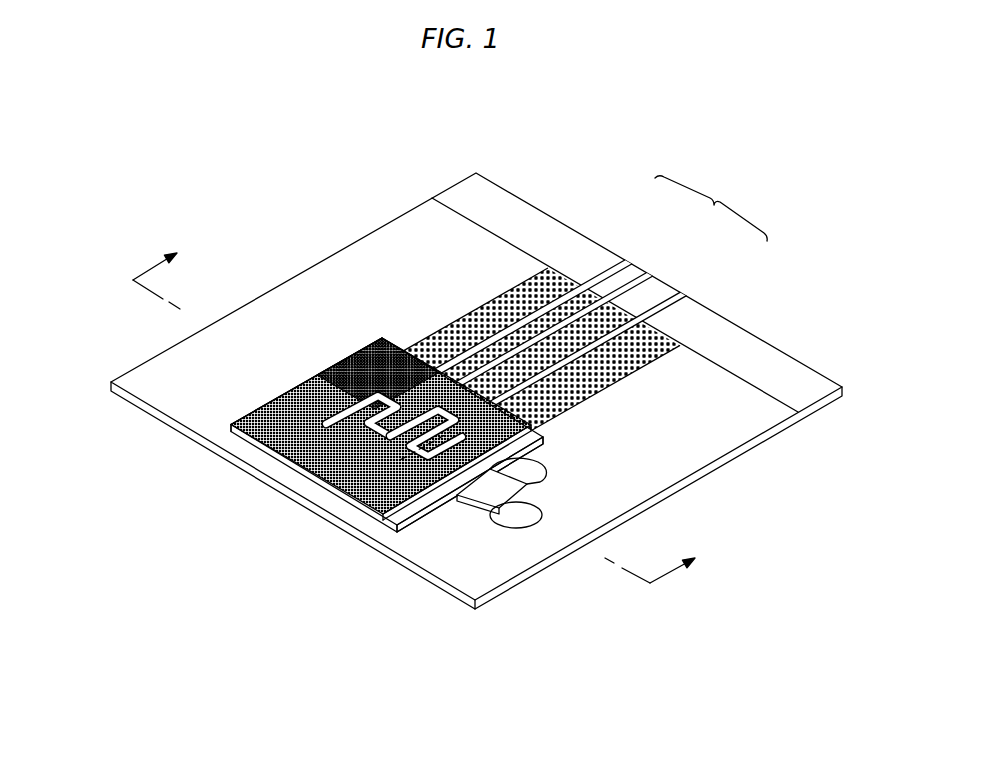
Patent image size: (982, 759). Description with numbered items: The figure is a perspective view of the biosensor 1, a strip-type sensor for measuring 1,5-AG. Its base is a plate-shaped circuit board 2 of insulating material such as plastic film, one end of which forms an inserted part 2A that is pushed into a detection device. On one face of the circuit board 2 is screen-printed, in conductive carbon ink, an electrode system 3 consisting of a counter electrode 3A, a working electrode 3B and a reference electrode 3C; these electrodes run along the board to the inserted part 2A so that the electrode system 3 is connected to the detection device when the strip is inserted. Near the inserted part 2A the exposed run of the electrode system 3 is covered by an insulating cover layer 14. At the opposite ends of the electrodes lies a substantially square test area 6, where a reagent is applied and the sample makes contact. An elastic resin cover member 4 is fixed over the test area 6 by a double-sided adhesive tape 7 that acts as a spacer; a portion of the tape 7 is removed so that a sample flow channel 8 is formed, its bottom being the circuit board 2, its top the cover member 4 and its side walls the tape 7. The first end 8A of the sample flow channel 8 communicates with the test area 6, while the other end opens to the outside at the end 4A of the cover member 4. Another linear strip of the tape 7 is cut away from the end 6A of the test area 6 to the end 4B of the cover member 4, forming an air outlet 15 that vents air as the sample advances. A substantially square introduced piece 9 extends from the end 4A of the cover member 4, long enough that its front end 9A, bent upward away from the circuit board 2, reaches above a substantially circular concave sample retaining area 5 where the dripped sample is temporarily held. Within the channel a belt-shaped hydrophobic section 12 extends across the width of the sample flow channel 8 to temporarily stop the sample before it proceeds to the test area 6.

The biosensor 1 is at (356, 214).
The circuit board 2 is at (197, 404).
The inserted part 2A is at (745, 335).
The electrode system 3 is at (598, 288).
The counter electrode 3A is at (632, 260).
The working electrode 3B is at (652, 276).
The reference electrode 3C is at (686, 292).
The cover member 4 is at (262, 460).
The end of cover member 4A is at (545, 440).
The end of cover member 4B is at (280, 398).
The sample retaining area 5 is at (516, 516).
The test area 6 is at (362, 455).
The end of test area 6A is at (371, 410).
The double-sided adhesive tape 7 is at (253, 406).
The sample flow channel 8 is at (405, 507).
The first end of sample flow channel 8A is at (373, 480).
The introduced piece 9 is at (477, 495).
The front end of introduced piece 9A is at (555, 470).
The hydrophobic section 12 is at (447, 512).
The cover layer 14 is at (638, 370).
The air outlet 15 is at (317, 390).